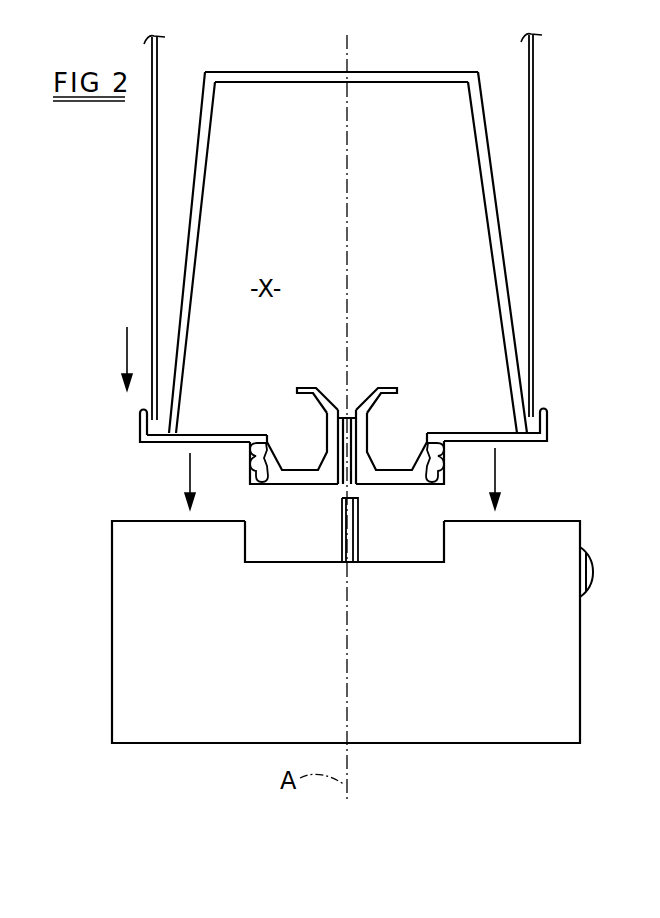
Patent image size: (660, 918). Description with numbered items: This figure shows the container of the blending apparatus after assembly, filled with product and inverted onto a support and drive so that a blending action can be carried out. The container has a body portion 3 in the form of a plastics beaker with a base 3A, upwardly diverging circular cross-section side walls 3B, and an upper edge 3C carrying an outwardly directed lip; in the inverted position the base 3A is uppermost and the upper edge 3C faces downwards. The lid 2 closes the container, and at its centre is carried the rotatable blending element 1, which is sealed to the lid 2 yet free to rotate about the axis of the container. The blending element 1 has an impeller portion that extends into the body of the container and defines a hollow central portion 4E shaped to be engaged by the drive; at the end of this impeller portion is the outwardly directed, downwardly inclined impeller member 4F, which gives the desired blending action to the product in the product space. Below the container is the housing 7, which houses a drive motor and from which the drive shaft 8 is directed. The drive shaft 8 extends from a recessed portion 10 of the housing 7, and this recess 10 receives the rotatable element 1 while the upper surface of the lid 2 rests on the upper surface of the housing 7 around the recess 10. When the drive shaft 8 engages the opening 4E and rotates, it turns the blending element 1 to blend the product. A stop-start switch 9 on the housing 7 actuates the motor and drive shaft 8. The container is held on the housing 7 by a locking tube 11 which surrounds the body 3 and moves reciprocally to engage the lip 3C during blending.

The rotatable blending element 1 is at (303, 497).
The lid 2 is at (166, 458).
The body portion 3 is at (382, 219).
The base 3A is at (427, 70).
The side walls 3B is at (495, 183).
The upper edge 3C is at (537, 423).
The hollow central portion 4E is at (366, 492).
The impeller member 4F is at (377, 386).
The housing 7 is at (517, 765).
The drive shaft 8 is at (358, 525).
The stop-start switch 9 is at (595, 589).
The recessed portion 10 is at (428, 563).
The locking tube 11 is at (152, 248).